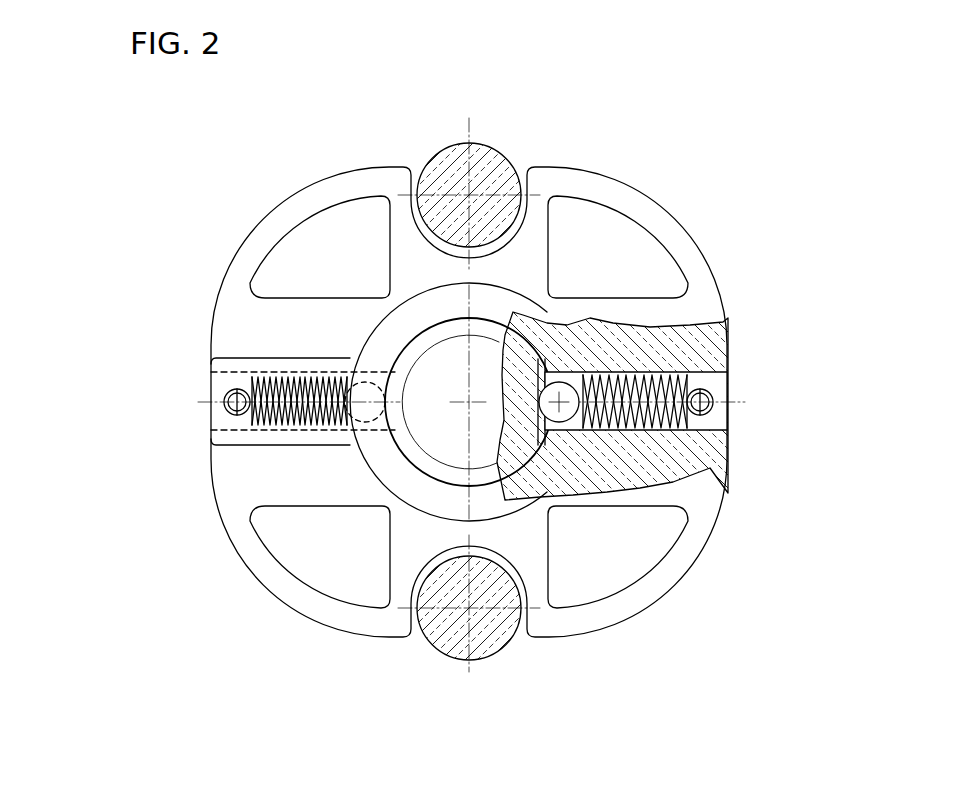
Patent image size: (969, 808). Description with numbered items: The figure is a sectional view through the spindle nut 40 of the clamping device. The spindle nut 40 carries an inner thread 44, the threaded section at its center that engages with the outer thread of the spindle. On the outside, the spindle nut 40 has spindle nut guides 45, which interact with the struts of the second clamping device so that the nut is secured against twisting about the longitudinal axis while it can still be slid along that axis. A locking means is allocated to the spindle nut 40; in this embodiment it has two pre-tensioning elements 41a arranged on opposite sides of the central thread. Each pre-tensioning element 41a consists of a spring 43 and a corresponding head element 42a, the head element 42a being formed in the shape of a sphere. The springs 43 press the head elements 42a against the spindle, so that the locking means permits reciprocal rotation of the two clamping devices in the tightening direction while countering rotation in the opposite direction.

The spindle nut 40 is at (190, 566).
The pre-tensioning element 41a is at (262, 370).
The head element 42a is at (570, 378).
The spring 43 is at (677, 423).
The inner thread 44 is at (420, 343).
The spindle nut guide 45 is at (533, 247).